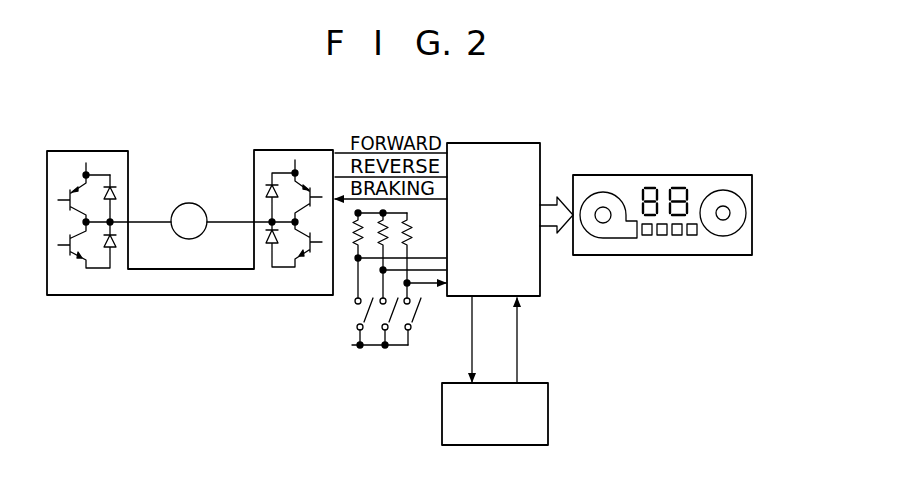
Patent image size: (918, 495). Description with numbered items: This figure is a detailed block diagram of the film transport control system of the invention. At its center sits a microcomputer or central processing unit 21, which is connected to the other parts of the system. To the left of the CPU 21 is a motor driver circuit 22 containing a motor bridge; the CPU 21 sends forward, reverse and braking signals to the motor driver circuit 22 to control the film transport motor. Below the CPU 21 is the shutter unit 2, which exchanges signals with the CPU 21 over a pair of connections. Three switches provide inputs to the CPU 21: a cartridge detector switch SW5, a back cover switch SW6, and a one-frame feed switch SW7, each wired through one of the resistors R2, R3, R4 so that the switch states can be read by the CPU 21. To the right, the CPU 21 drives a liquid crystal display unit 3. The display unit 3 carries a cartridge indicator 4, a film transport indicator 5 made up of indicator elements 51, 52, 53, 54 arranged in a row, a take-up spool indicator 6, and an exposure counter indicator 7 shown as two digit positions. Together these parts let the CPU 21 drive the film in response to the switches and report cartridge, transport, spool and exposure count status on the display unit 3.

The shutter unit 2 is at (548, 420).
The liquid crystal display unit 3 is at (618, 175).
The cartridge indicator 4 is at (603, 192).
The film transport indicator 5 is at (638, 237).
The indicator element 51 is at (648, 237).
The indicator element 52 is at (663, 237).
The indicator element 53 is at (677, 237).
The indicator element 54 is at (692, 237).
The take-up spool indicator 6 is at (725, 237).
The exposure counter indicator 7 is at (667, 186).
The central processing unit 21 is at (503, 143).
The motor driver circuit 22 is at (128, 151).
The resistor R2 is at (387, 226).
The resistor R3 is at (409, 229).
The resistor R4 is at (353, 232).
The cartridge detector switch SW5 is at (378, 313).
The back cover switch SW6 is at (418, 309).
The one-frame feed switch SW7 is at (355, 316).